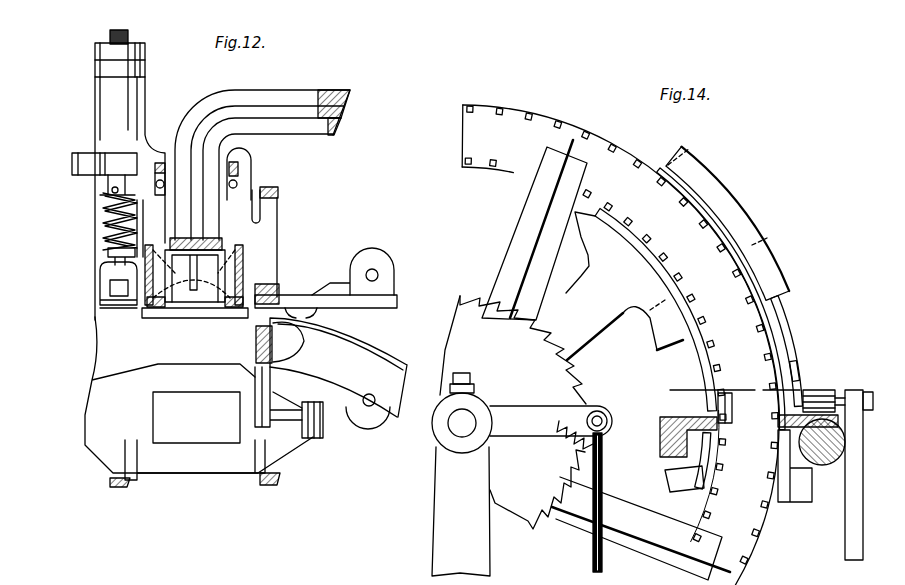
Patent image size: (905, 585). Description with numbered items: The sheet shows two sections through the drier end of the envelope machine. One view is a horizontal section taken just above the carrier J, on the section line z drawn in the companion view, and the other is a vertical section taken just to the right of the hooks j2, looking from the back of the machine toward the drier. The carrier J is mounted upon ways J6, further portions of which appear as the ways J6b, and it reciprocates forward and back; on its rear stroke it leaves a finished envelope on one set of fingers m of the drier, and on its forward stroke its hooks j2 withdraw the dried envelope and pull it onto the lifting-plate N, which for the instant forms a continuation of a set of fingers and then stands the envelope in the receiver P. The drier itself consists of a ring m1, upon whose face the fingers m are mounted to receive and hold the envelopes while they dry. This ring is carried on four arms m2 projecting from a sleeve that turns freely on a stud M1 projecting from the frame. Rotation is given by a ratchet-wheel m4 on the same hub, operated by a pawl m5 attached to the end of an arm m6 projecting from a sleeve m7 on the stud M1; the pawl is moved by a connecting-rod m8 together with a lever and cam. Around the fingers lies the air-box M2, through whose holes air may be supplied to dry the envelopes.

In FIG. 12, the carrier J is at (277, 240).
In FIG. 14, the carrier J is at (672, 416).
In FIG. 12, the ways J6 is at (128, 37).
In FIG. 14, the ways J6 is at (662, 442).
In FIG. 12, the bolt and spring assembly J6b is at (278, 196).
In FIG. 12, the hooks j2 is at (156, 170).
In FIG. 14, the hooks j2 is at (712, 390).
In FIG. 12, the receiver P is at (291, 259).
In FIG. 12, the lifting-plate N is at (258, 337).
In FIG. 12, the air-box M2 is at (246, 272).
In FIG. 14, the air-box M2 is at (689, 339).
In FIG. 12, the fingers m is at (196, 302).
In FIG. 14, the ring m1 is at (512, 118).
In FIG. 14, the arms m2 is at (606, 360).
In FIG. 14, the ratchet-wheel m4 is at (575, 382).
In FIG. 14, the stud M1 is at (462, 425).
In FIG. 14, the pawl m5 is at (592, 431).
In FIG. 14, the arm m6 is at (551, 421).
In FIG. 14, the sleeve m7 is at (430, 430).
In FIG. 14, the connecting-rod m8 is at (613, 502).
In FIG. 14, the section line z z is at (731, 383).